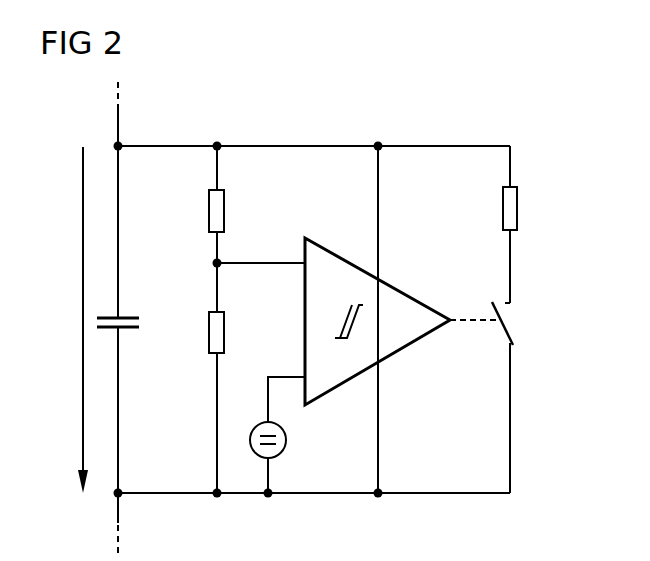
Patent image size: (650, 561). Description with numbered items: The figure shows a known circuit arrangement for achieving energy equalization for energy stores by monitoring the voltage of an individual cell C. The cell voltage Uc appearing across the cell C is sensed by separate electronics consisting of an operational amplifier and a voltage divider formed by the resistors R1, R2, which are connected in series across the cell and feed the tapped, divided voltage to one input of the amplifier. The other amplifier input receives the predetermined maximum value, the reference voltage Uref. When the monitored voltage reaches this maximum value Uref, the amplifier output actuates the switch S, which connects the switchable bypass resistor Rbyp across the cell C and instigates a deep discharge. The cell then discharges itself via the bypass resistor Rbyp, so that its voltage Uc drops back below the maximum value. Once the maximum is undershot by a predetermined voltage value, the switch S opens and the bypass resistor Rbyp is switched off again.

The cell C is at (127, 318).
The voltage divider resistor R1 is at (224, 332).
The voltage divider resistor R2 is at (224, 210).
The bypass resistor Rbyp is at (503, 207).
The switch S is at (510, 323).
The reference voltage Uref is at (291, 435).
The cell voltage Uc is at (67, 320).